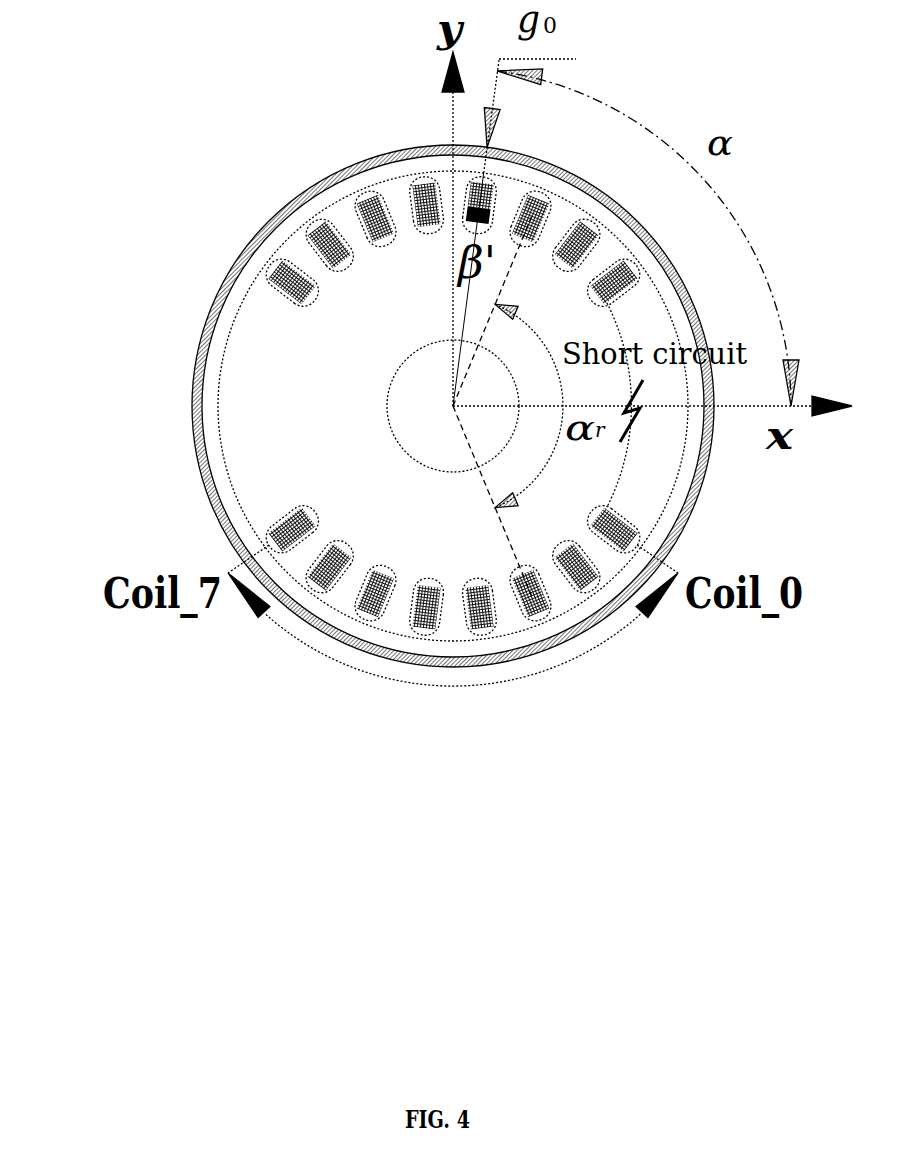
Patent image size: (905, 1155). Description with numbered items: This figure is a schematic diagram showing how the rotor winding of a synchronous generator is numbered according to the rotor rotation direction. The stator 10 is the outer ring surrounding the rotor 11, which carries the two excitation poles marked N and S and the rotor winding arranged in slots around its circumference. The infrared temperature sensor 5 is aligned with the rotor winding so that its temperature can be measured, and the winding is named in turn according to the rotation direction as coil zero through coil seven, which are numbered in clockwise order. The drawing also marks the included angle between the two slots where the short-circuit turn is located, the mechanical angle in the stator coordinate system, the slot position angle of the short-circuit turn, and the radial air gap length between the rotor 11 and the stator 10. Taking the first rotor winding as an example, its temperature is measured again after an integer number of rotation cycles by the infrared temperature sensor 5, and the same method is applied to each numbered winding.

The stator 10 is at (162, 454).
The rotor 11 is at (300, 328).
The infrared temperature sensor 5 is at (658, 512).